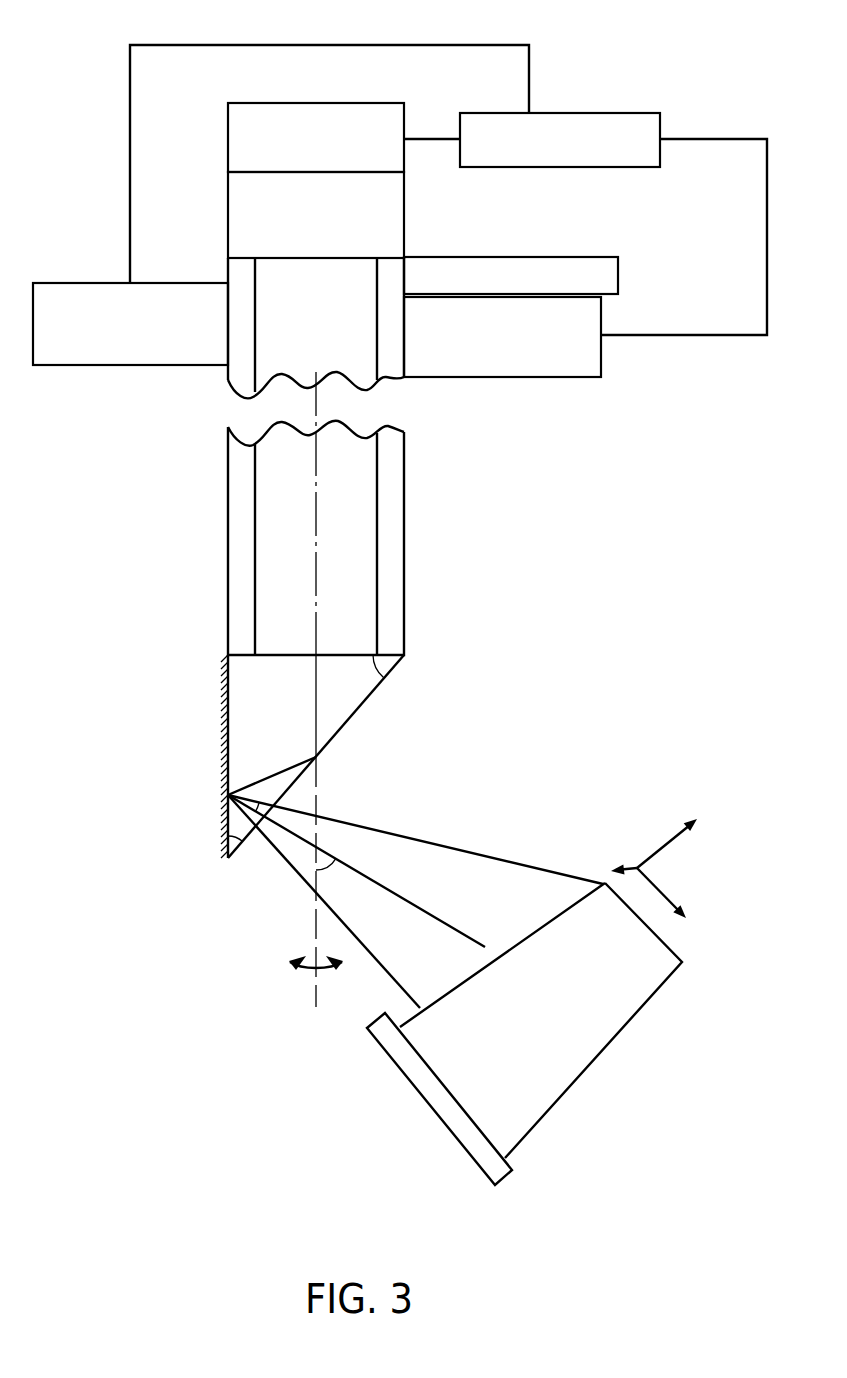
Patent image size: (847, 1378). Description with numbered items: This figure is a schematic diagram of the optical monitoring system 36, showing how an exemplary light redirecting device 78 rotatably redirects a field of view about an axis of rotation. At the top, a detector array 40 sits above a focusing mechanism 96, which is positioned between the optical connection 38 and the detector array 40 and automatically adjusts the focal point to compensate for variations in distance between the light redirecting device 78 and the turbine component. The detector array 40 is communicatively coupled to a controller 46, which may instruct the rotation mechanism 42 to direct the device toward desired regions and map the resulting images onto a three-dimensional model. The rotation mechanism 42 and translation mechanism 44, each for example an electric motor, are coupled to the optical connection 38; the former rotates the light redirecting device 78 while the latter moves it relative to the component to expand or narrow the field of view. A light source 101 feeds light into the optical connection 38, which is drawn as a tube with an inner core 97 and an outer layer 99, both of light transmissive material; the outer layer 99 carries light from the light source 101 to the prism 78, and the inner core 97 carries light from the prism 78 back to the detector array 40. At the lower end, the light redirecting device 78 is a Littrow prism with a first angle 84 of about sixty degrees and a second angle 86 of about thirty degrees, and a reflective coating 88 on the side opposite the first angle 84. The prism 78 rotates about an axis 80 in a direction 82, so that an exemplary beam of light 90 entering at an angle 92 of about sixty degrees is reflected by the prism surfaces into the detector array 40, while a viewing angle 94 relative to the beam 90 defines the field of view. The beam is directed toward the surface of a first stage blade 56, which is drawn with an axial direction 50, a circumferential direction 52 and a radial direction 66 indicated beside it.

The optical monitoring system 36 is at (666, 233).
The optical connection 38 is at (437, 481).
The detector array 40 is at (291, 100).
The rotation mechanism 42 is at (88, 367).
The translation mechanism 44 is at (543, 378).
The controller 46 is at (583, 111).
The axial direction 50 is at (657, 885).
The circumferential direction 52 is at (633, 862).
The first stage blade 56 is at (560, 1059).
The radial direction 66 is at (660, 837).
The light redirecting device 78 is at (348, 727).
The axis 80 is at (315, 989).
The direction 82 is at (285, 965).
The first angle 84 is at (367, 683).
The second angle 86 is at (252, 838).
The reflective coating 88 is at (228, 757).
The beam of light 90 is at (353, 862).
The angle 92 is at (323, 868).
The viewing angle 94 is at (270, 820).
The focusing mechanism 96 is at (404, 200).
The inner core 97 is at (282, 545).
The outer layer 99 is at (392, 585).
The light source 101 is at (618, 273).